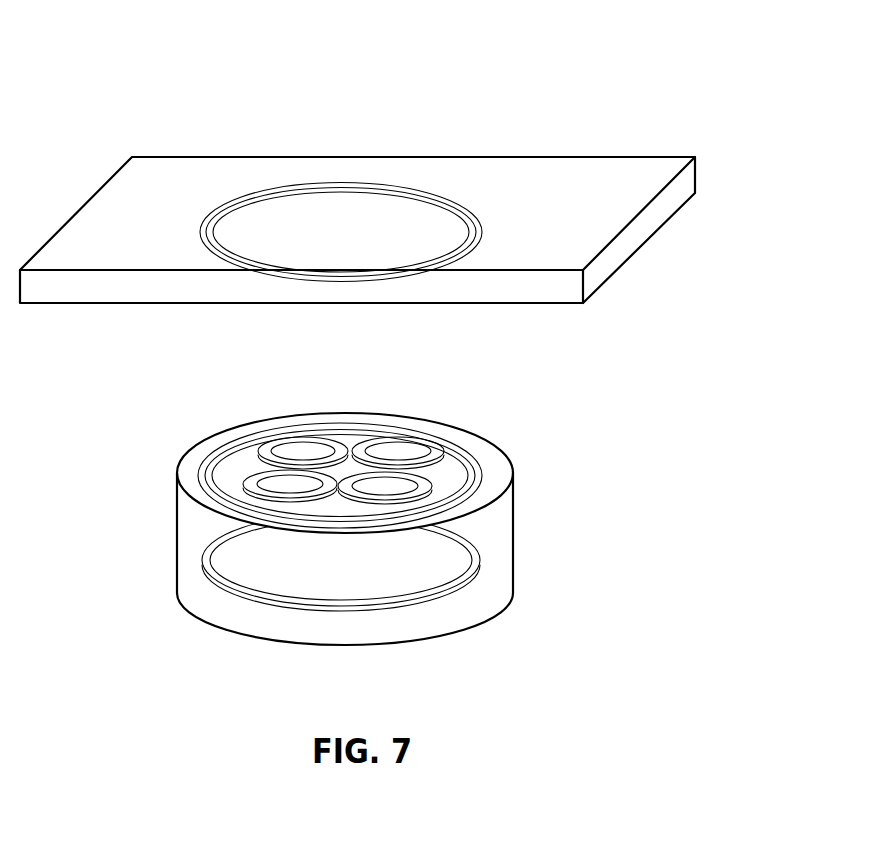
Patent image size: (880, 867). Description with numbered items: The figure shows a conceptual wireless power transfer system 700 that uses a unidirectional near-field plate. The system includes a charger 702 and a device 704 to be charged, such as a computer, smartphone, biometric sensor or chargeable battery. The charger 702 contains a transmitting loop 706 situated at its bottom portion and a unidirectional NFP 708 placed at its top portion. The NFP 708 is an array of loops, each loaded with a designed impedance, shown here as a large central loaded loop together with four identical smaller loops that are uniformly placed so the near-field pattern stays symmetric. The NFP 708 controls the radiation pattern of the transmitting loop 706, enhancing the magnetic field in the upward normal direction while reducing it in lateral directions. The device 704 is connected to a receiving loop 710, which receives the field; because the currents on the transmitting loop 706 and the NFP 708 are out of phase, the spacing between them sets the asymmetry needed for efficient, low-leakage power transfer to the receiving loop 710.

The wireless power transfer system 700 is at (627, 91).
The charger 702 is at (175, 535).
The device to be charged 704 is at (642, 246).
The transmitting loop 706 is at (478, 573).
The unidirectional NFP 708 is at (453, 443).
The receiving loop 710 is at (307, 183).